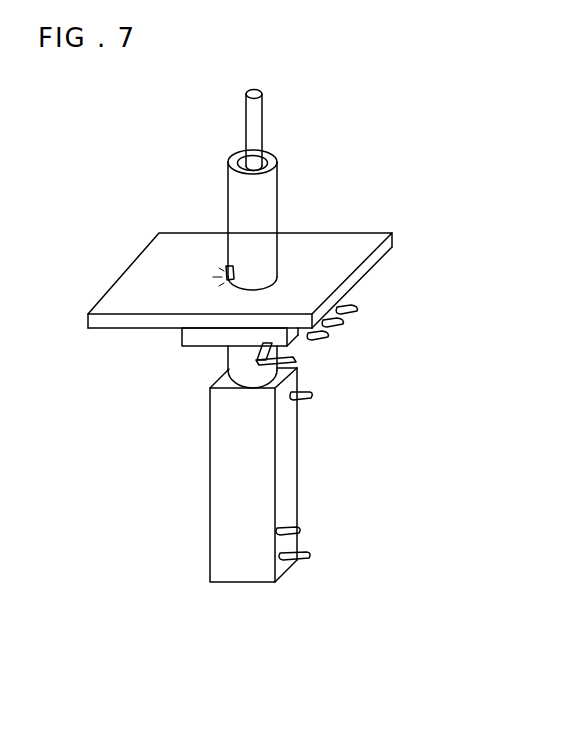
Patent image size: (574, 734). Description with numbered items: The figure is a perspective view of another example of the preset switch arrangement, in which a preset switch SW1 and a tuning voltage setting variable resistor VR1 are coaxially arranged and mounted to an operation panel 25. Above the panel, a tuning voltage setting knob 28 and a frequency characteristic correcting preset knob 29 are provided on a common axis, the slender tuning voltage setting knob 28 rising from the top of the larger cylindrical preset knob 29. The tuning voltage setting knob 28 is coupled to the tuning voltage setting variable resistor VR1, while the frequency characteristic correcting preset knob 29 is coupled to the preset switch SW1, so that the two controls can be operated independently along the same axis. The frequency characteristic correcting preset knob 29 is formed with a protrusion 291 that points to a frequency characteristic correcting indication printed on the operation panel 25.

The tuning voltage setting knob 28 is at (263, 104).
The frequency characteristic correcting preset knob 29 is at (266, 188).
The protrusion 291 is at (227, 266).
The operation panel 25 is at (343, 240).
The preset switch SW1 is at (207, 339).
The tuning voltage setting variable resistor VR1 is at (287, 458).